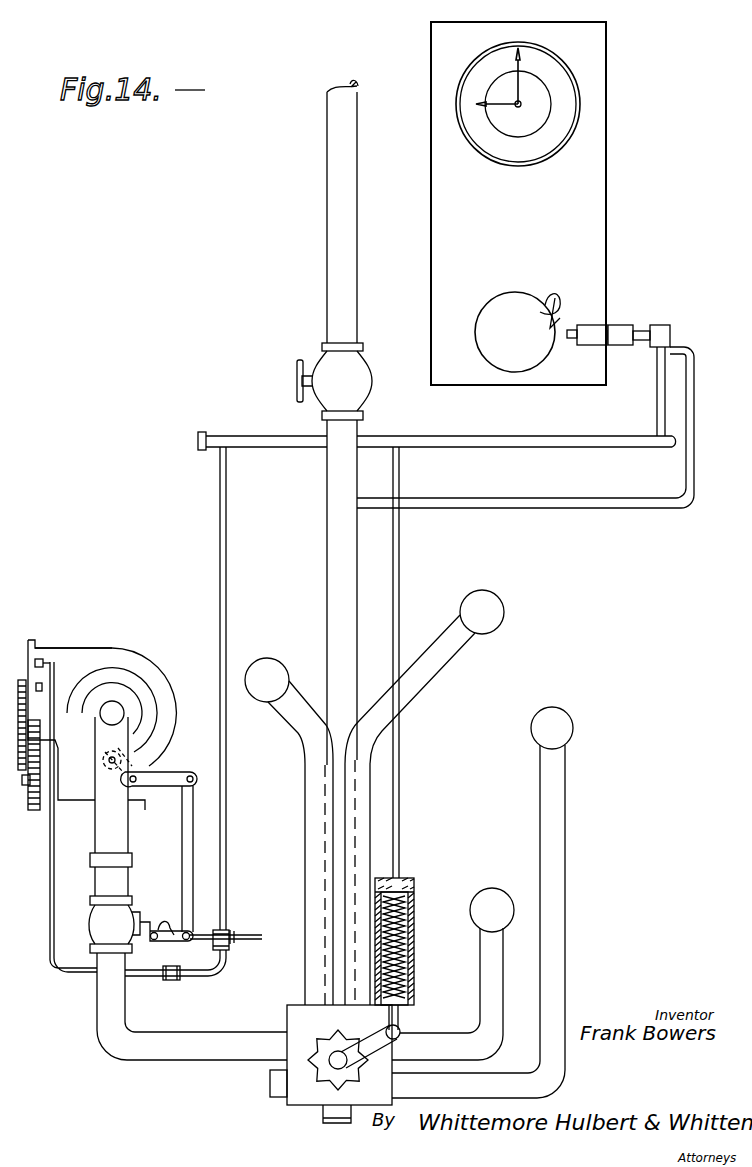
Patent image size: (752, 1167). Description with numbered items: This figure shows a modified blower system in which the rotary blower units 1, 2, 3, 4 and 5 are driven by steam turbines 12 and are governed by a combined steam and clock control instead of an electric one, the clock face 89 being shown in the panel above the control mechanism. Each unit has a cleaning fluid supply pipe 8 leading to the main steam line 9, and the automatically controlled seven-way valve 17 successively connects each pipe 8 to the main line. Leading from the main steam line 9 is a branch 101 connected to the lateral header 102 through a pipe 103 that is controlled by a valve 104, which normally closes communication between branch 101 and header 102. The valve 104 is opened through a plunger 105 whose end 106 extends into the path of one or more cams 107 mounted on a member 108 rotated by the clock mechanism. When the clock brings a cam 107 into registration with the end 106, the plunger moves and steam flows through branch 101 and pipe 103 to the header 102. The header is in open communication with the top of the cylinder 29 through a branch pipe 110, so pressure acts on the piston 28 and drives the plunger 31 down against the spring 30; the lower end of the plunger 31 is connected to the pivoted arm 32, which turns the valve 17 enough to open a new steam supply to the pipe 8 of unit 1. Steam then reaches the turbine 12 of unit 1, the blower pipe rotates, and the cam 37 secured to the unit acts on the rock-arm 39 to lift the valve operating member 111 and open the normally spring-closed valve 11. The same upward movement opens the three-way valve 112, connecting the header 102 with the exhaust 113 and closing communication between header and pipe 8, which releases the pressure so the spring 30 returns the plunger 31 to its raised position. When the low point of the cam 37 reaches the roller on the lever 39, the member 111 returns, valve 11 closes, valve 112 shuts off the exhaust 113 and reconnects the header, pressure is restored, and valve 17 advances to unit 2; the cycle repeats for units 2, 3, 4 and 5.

The blower unit 1 is at (118, 716).
The blower unit 2 is at (276, 672).
The blower unit 3 is at (490, 626).
The blower unit 4 is at (486, 900).
The blower unit 5 is at (606, 684).
The cleaning fluid supply pipe 8 is at (197, 1053).
The main steam line 9 is at (355, 278).
The valve 11 is at (100, 922).
The steam turbine 12 is at (37, 675).
The automatically controlled valve 17 is at (292, 1025).
The piston 28 is at (412, 876).
The cylinder 29 is at (416, 905).
The spring 30 is at (408, 962).
The plunger 31 is at (404, 940).
The arm 32 is at (380, 1049).
The cam 37 is at (153, 721).
The rock-arm 39 is at (177, 777).
The clock 89 is at (522, 88).
The branch 101 is at (488, 499).
The lateral header 102 is at (596, 444).
The pipe 103 is at (658, 400).
The valve 104 is at (667, 330).
The plunger 105 is at (600, 330).
The end of plunger 106 is at (575, 330).
The cam 107 is at (552, 285).
The member 108 is at (522, 366).
The branch pipe 110 is at (401, 812).
The valve operating member 111 is at (176, 933).
The three-way valve 112 is at (225, 952).
The exhaust 113 is at (272, 925).